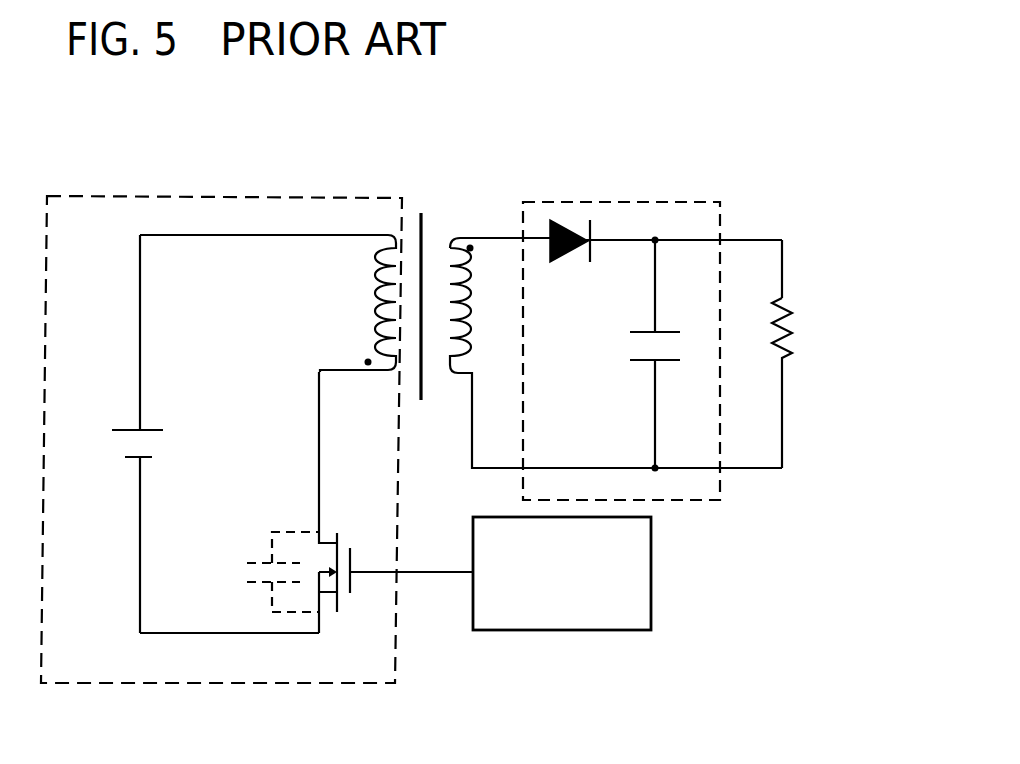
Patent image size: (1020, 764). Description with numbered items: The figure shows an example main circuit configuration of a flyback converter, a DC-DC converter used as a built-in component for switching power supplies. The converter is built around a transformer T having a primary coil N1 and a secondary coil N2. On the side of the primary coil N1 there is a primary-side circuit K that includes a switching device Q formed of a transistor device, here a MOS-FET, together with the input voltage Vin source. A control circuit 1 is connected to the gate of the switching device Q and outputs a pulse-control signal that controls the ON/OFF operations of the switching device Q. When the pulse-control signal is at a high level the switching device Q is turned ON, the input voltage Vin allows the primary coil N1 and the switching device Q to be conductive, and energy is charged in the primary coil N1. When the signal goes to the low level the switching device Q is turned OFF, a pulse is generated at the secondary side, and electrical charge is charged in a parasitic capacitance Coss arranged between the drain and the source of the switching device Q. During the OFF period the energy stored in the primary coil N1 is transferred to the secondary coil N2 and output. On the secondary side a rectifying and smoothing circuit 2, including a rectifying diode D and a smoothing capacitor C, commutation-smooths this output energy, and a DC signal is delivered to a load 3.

The control circuit 1 is at (550, 632).
The rectifying and smoothing circuit 2 is at (638, 203).
The load 3 is at (793, 330).
The primary-side circuit K is at (222, 688).
The switching device Q is at (350, 588).
The smoothing capacitor C is at (630, 349).
The rectifying diode D is at (560, 256).
The transformer T is at (430, 236).
The primary coil N1 is at (377, 305).
The secondary coil N2 is at (463, 304).
The input voltage Vin is at (112, 434).
The parasitic capacitance Coss is at (272, 562).